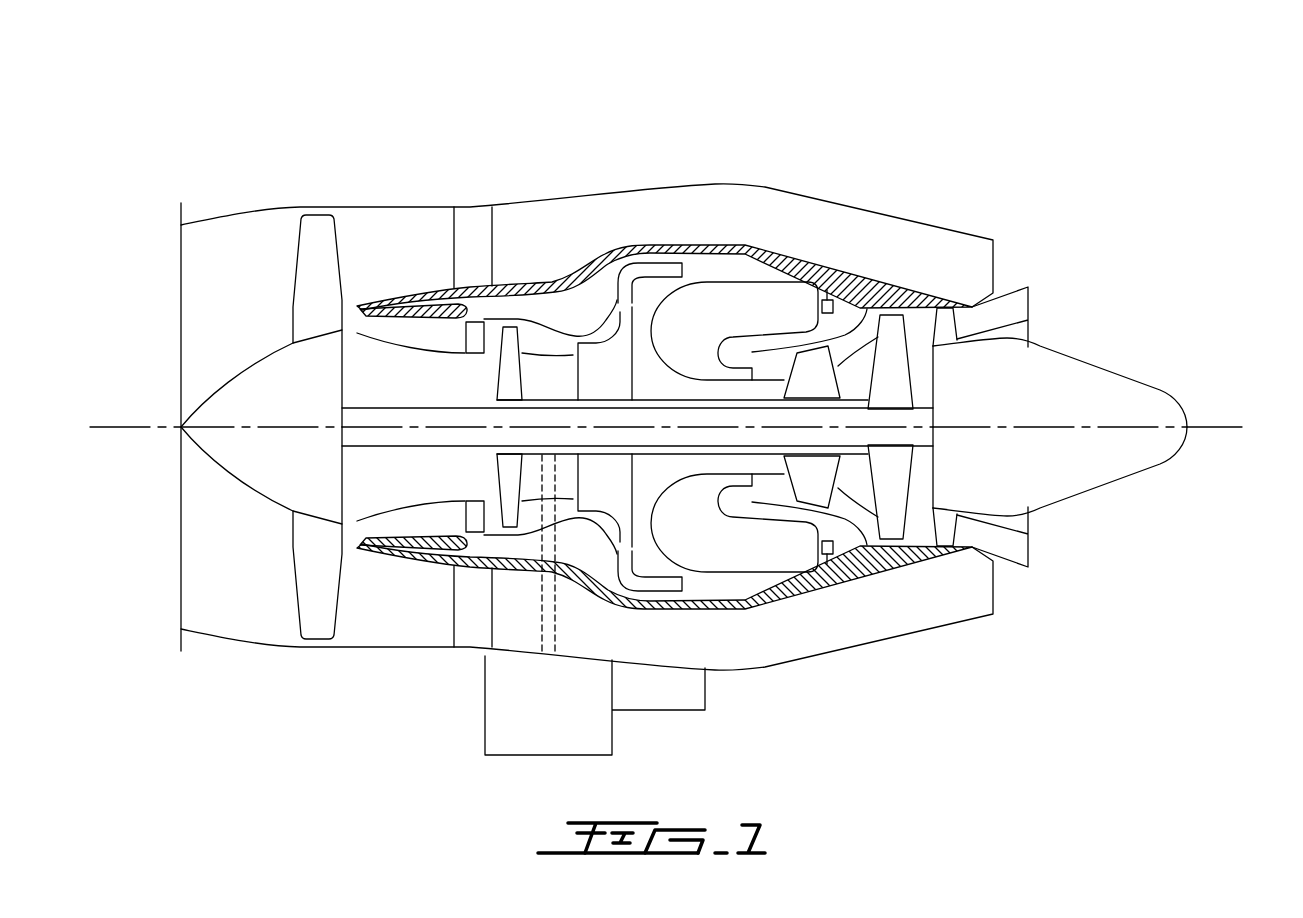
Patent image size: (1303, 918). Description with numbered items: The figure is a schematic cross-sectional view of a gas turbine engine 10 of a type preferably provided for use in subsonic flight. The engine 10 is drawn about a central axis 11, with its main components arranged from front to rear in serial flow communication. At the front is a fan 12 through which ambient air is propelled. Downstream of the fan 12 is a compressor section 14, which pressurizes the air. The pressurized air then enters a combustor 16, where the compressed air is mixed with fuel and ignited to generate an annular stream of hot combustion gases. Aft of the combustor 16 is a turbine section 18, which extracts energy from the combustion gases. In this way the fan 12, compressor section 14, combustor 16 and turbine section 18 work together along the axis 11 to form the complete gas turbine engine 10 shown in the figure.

The gas turbine engine 10 is at (938, 134).
The central longitudinal axis 11 is at (1221, 427).
The fan 12 is at (313, 564).
The compressor section 14 is at (540, 337).
The combustor 16 is at (737, 300).
The turbine section 18 is at (850, 487).